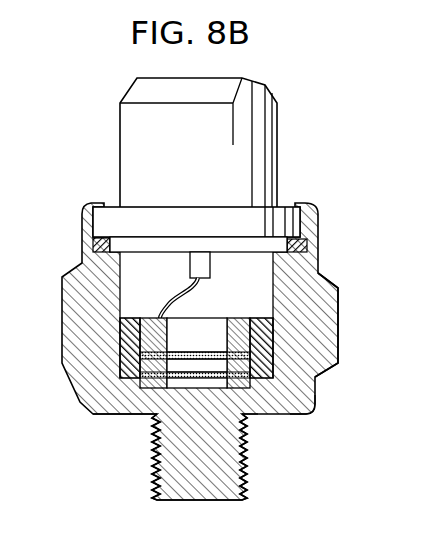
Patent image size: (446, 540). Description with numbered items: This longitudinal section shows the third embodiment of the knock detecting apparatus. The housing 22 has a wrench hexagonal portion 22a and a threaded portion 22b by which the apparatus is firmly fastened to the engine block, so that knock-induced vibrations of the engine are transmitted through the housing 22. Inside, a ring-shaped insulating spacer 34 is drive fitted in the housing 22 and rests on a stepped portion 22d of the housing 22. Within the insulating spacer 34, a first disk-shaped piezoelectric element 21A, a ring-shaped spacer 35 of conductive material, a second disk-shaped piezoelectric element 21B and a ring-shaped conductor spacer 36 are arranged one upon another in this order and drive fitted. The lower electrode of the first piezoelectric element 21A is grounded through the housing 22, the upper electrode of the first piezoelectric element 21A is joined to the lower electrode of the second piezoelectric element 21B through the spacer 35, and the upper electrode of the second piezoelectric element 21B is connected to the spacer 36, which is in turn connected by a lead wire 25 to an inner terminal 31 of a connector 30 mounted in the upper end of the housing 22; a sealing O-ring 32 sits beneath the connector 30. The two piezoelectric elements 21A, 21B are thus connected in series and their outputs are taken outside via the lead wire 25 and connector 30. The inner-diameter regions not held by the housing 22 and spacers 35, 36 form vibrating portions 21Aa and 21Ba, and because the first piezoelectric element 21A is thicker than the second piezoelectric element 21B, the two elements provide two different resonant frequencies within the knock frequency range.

The connector 30 is at (273, 139).
The inner terminal 31 is at (210, 262).
The sealing O-ring 32 is at (312, 247).
The lead wire 25 is at (168, 304).
The ring-shaped conductor spacer 36 is at (243, 318).
The wrench hexagonal portion 22a is at (339, 339).
The ring-shaped insulating spacer 34 is at (250, 381).
The second disk-shaped piezoelectric element 21B is at (138, 352).
The vibrating portion 21Ba is at (197, 345).
The ring-shaped spacer 35 is at (138, 372).
The first disk-shaped piezoelectric element 21A is at (307, 411).
The vibrating portion 21Aa is at (157, 417).
The housing 22 is at (293, 416).
The stepped portion 22d is at (265, 421).
The threaded portion 22b is at (247, 489).